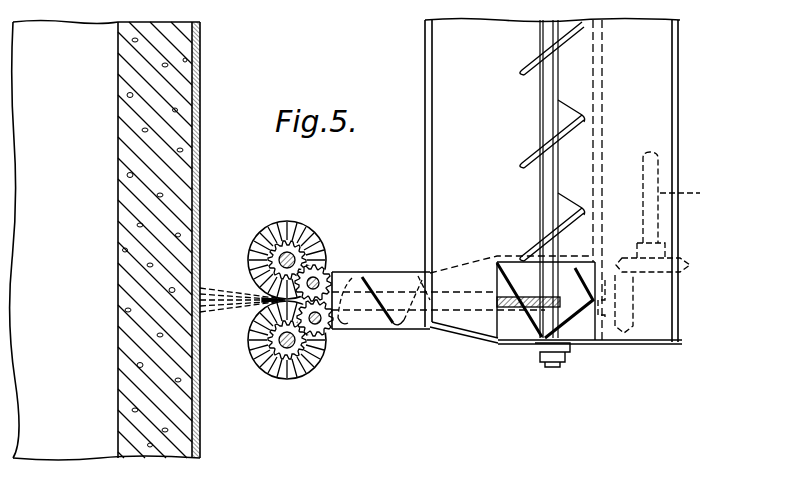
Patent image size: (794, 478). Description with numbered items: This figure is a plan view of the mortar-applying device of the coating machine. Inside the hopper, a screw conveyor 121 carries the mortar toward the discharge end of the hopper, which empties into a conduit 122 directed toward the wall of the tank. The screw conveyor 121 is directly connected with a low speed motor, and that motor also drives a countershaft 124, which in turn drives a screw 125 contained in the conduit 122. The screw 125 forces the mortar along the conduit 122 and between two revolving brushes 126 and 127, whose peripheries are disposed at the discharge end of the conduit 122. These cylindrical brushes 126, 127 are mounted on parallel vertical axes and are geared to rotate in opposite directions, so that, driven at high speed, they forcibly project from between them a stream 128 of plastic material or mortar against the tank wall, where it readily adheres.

The screw conveyor 121 is at (527, 85).
The conduit 122 is at (401, 245).
The countershaft 124 is at (688, 193).
The screw 125 is at (389, 336).
The revolving brush 126 is at (330, 205).
The revolving brush 127 is at (283, 380).
The stream 128 is at (222, 292).